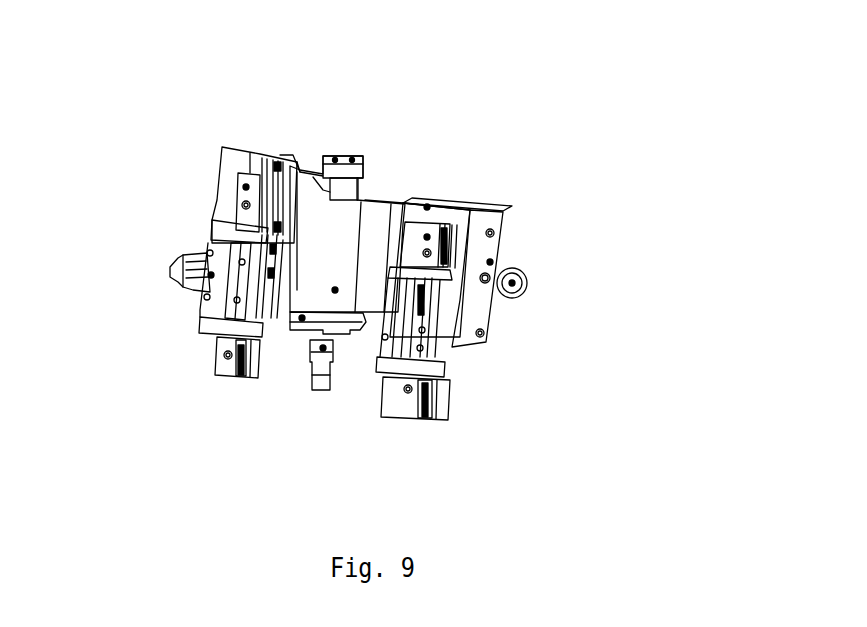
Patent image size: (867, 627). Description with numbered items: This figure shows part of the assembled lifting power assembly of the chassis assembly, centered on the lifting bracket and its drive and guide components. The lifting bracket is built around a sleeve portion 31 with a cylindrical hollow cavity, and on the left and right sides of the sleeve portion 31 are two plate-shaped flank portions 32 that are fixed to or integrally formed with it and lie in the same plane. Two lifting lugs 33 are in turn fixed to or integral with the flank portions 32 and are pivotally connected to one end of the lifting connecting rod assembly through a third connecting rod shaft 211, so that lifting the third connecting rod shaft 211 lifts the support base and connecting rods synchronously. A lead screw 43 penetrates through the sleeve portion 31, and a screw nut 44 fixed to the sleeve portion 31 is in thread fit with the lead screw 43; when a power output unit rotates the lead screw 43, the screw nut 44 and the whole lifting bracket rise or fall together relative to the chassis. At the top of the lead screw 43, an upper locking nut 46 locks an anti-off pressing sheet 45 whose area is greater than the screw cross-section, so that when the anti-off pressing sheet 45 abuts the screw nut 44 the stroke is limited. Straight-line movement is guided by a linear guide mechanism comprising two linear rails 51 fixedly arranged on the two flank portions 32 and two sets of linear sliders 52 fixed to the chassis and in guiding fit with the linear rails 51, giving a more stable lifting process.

The sleeve portion 31 is at (410, 161).
The flank portion 32 is at (489, 137).
The lifting lug 33 is at (492, 247).
The third connecting rod shaft 211 is at (558, 246).
The lead screw 43 is at (357, 418).
The screw nut 44 is at (275, 400).
The anti-off pressing sheet 45 is at (310, 105).
The upper locking nut 46 is at (286, 125).
The linear rail 51 is at (370, 243).
The linear slider 52 is at (370, 309).